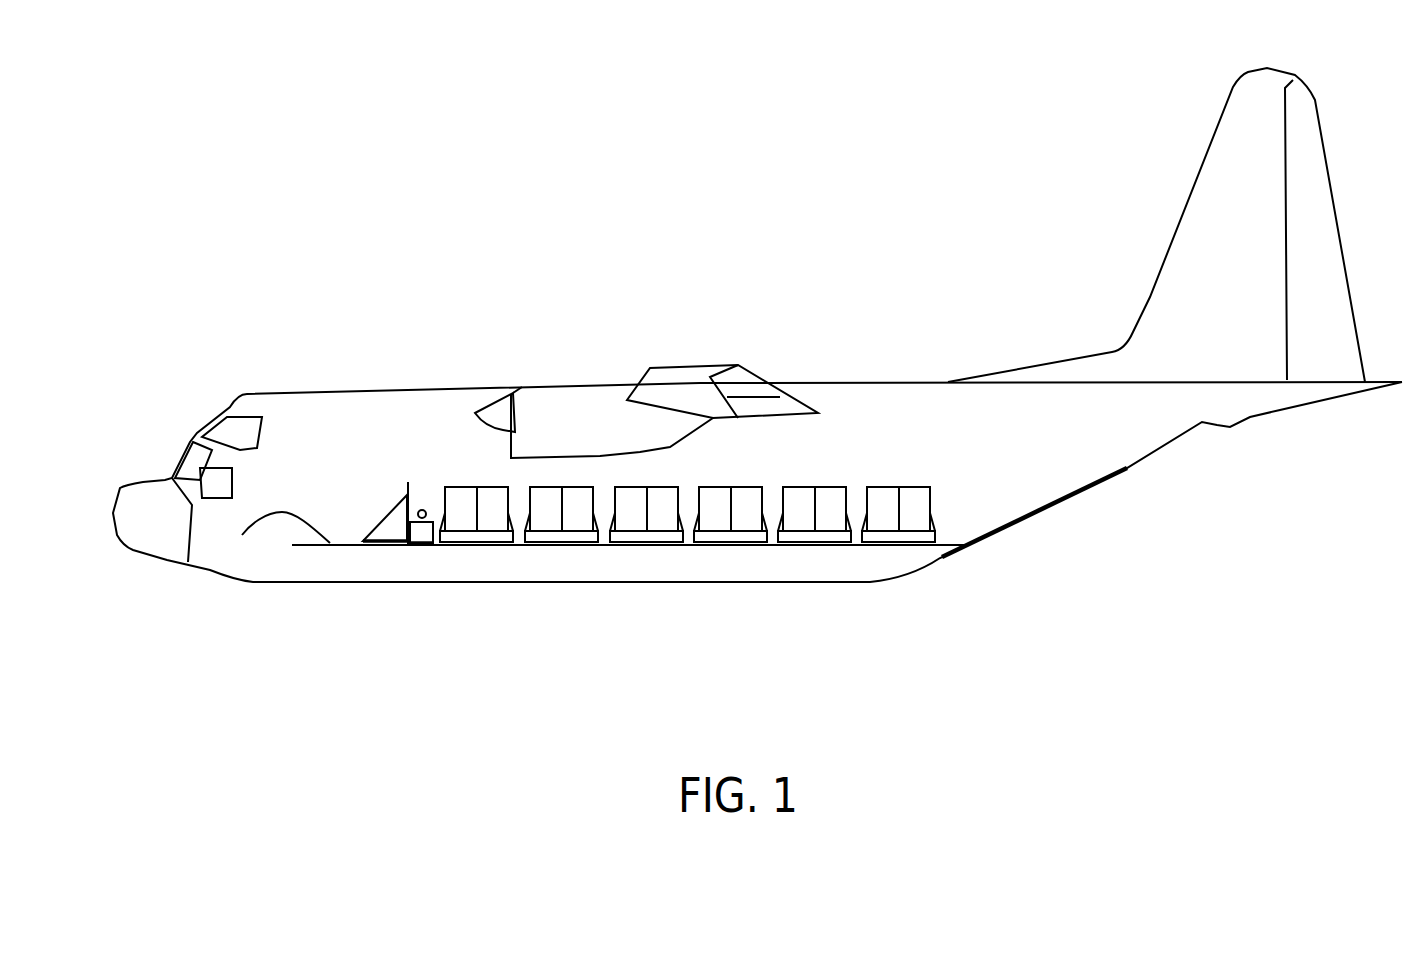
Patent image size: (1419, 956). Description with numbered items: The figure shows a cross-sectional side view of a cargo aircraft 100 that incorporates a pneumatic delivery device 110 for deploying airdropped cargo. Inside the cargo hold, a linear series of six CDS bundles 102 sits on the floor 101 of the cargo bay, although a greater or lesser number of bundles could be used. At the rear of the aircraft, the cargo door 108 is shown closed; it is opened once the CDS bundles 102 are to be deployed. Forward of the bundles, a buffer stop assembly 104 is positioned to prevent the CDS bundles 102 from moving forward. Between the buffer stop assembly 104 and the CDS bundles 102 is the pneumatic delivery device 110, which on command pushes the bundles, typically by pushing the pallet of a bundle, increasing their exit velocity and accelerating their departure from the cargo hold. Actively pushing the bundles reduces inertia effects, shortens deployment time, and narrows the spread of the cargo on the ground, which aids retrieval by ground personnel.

The cargo aircraft 100 is at (422, 239).
The floor 101 is at (242, 535).
The CDS bundles 102 is at (745, 520).
The buffer stop assembly 104 is at (402, 543).
The cargo door 108 is at (1007, 530).
The pneumatic delivery device 110 is at (428, 545).